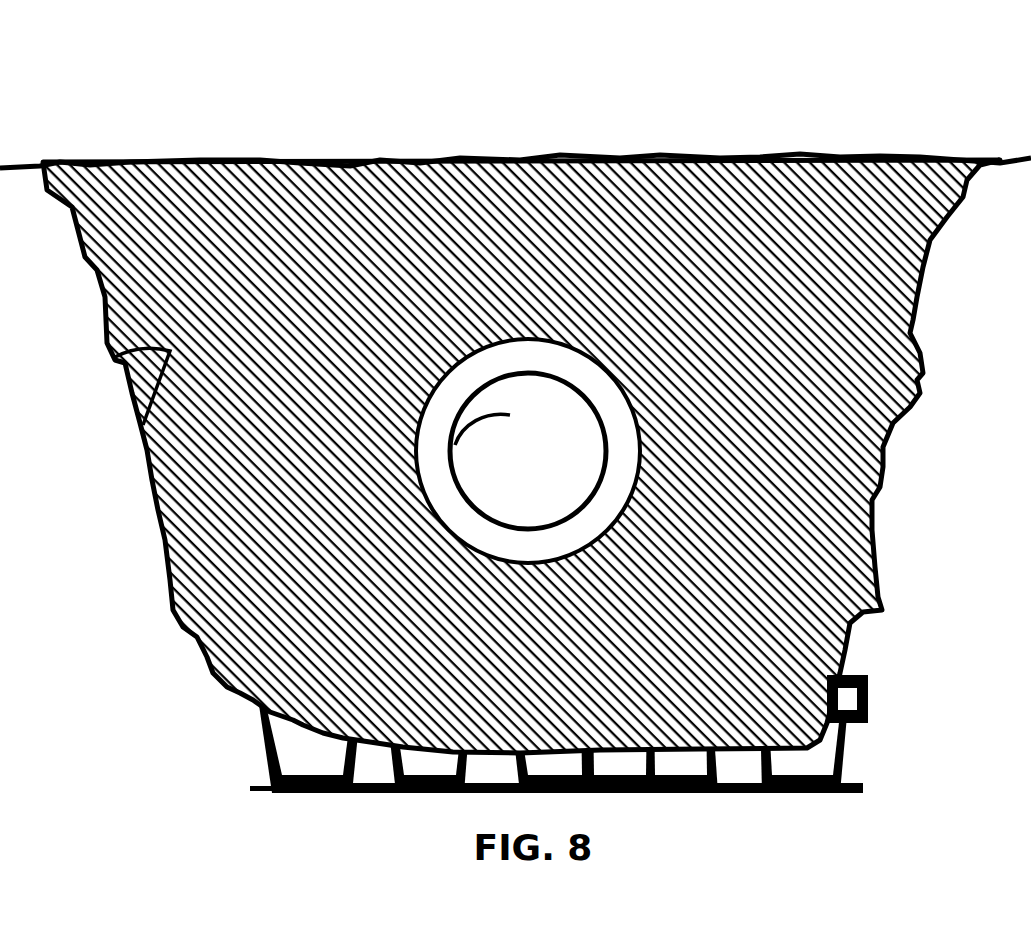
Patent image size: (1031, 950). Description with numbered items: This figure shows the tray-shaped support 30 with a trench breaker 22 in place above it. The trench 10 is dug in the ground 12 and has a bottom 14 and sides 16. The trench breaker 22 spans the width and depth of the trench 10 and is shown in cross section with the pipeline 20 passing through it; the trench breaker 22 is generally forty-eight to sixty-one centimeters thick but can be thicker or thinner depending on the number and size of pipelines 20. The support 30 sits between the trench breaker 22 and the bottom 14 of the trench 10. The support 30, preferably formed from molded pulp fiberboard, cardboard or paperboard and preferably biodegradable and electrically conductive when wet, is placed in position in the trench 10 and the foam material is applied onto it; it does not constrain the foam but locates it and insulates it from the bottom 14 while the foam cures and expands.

The trench 10 is at (604, 118).
The ground 12 is at (968, 474).
The bottom 14 is at (257, 793).
The sides 16 is at (143, 425).
The pipeline 20 is at (411, 544).
The trench breaker 22 is at (288, 222).
The support 30 is at (870, 707).